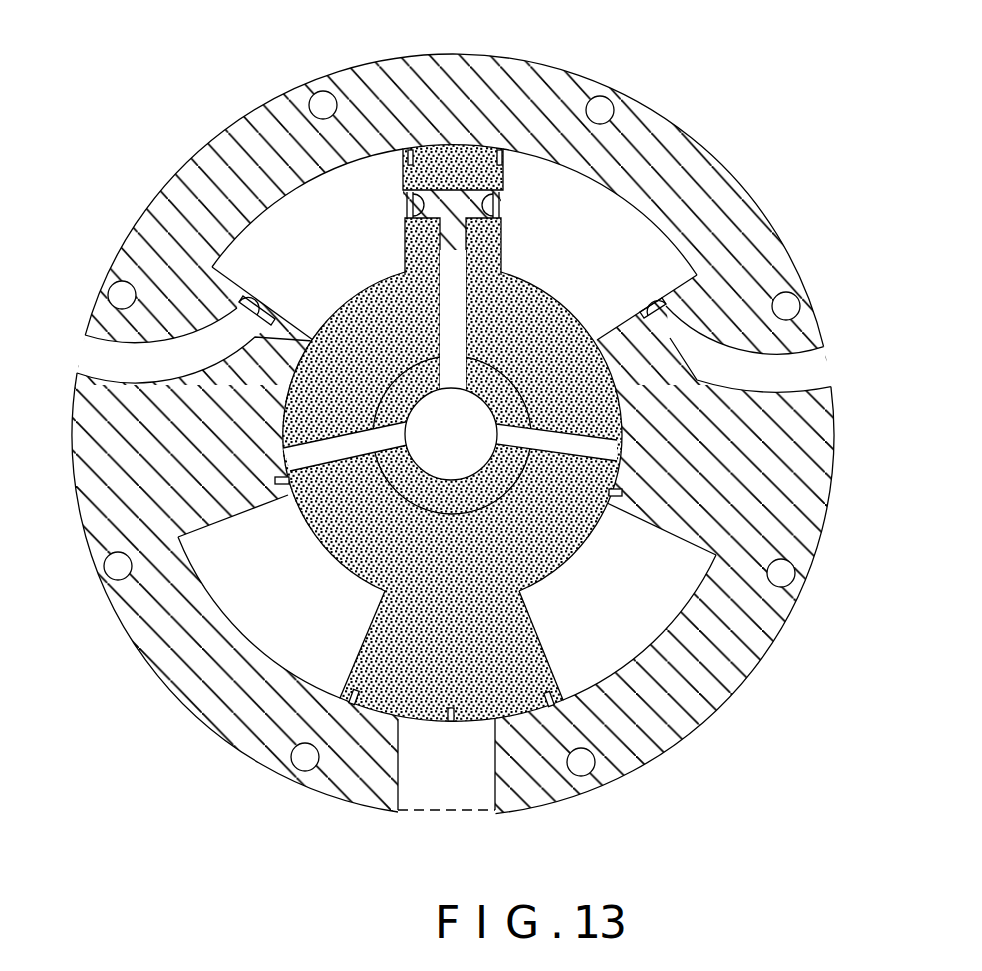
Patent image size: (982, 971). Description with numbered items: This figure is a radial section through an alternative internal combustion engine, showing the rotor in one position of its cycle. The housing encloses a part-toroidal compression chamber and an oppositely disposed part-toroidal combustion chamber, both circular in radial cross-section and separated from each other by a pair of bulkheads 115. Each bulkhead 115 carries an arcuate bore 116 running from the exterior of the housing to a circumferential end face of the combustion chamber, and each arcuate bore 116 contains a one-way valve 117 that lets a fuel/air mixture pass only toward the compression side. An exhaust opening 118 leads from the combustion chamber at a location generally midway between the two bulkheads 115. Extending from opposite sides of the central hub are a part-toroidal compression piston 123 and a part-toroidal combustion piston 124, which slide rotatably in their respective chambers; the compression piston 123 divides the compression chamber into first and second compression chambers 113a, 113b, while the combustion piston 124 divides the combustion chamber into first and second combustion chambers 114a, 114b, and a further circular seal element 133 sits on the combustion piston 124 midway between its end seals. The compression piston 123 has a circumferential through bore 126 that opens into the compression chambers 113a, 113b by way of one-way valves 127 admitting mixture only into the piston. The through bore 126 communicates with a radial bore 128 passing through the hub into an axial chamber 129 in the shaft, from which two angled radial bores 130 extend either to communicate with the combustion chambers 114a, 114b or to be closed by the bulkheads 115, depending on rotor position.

The first compression chamber 113a is at (382, 238).
The second compression chamber 113b is at (645, 253).
The first combustion chamber 114a is at (340, 646).
The second combustion chamber 114b is at (662, 598).
The bulkhead 115 is at (205, 458).
The arcuate bore 116 is at (167, 379).
The one-way valve 117 is at (259, 306).
The exhaust opening 118 is at (443, 832).
The compression piston 123 is at (496, 245).
The combustion piston 124 is at (492, 636).
The through bore 126 is at (437, 197).
The one-way valve 127 is at (406, 204).
The radial bore 128 is at (447, 303).
The axial chamber 129 is at (476, 442).
The angled radial bore 130 is at (322, 463).
The circular seal element 133 is at (450, 722).